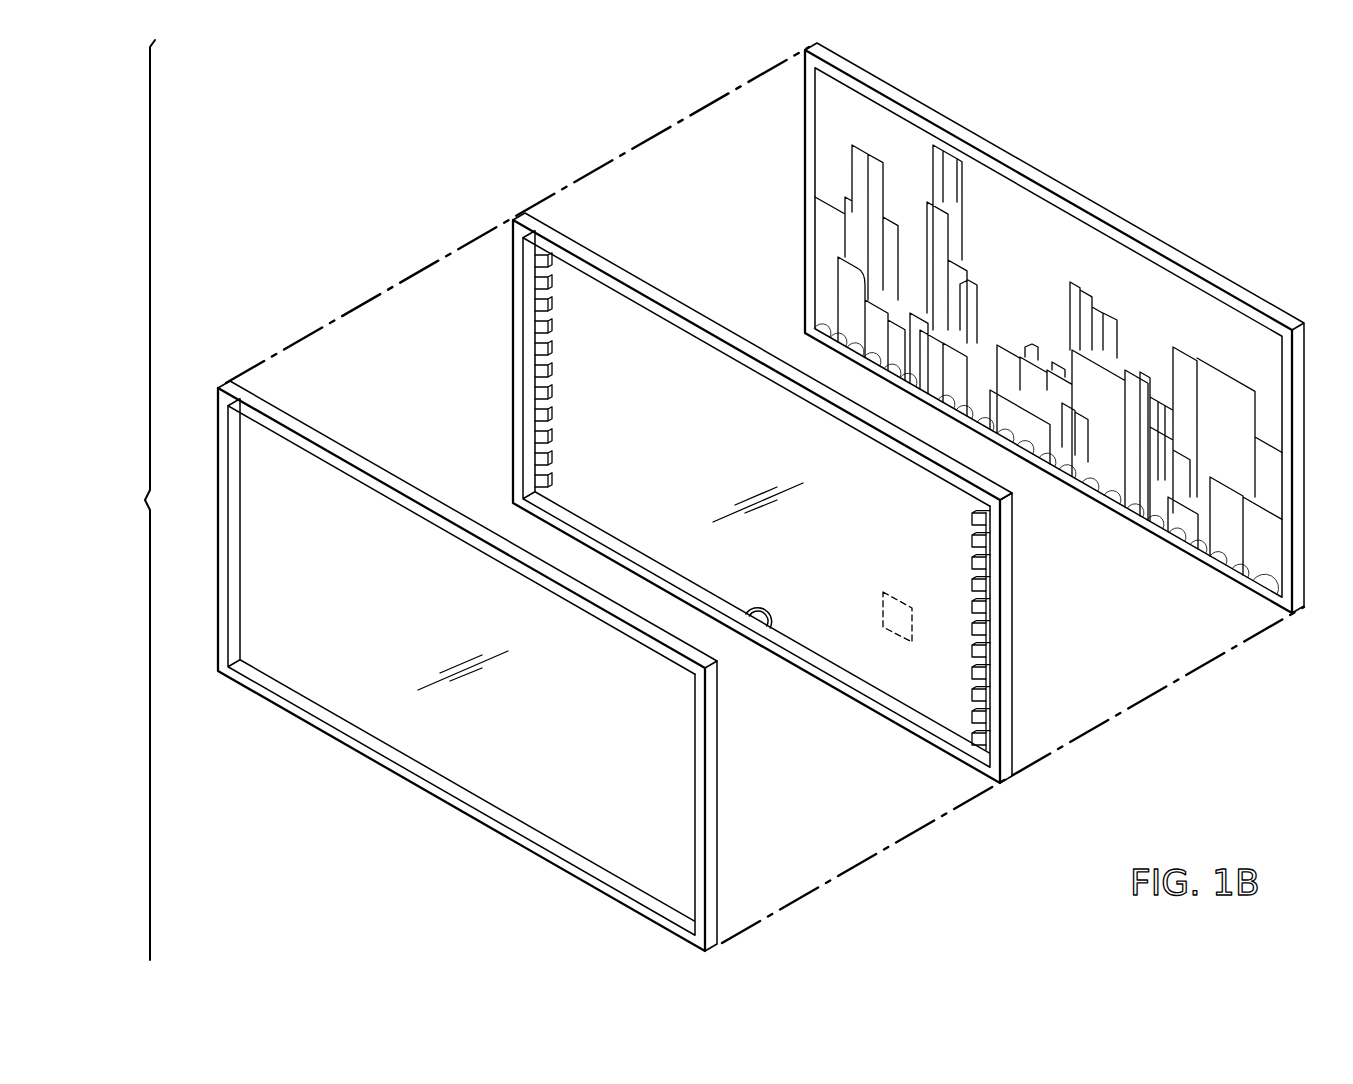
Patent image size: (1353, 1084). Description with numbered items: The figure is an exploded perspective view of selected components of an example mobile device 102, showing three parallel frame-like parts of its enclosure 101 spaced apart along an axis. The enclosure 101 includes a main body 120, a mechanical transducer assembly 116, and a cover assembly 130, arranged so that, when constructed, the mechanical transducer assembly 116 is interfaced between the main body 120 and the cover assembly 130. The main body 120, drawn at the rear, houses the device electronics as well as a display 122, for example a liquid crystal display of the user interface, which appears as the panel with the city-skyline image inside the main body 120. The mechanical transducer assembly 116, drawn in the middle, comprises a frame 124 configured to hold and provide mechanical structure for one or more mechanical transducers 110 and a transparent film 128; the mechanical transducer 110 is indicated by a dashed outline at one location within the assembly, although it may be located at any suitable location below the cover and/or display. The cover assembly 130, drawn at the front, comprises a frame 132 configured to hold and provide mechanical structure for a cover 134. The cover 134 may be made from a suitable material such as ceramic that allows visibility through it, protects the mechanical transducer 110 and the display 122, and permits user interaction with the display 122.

The enclosure 101 is at (126, 500).
The mobile device 102 is at (364, 108).
The mechanical transducer 110 is at (883, 606).
The mechanical transducer assembly 116 is at (1012, 633).
The main body 120 is at (1200, 274).
The display 122 is at (1036, 208).
The frame 124 is at (677, 314).
The transparent film 128 is at (898, 692).
The cover assembly 130 is at (720, 805).
The frame 132 is at (297, 436).
The cover 134 is at (606, 862).